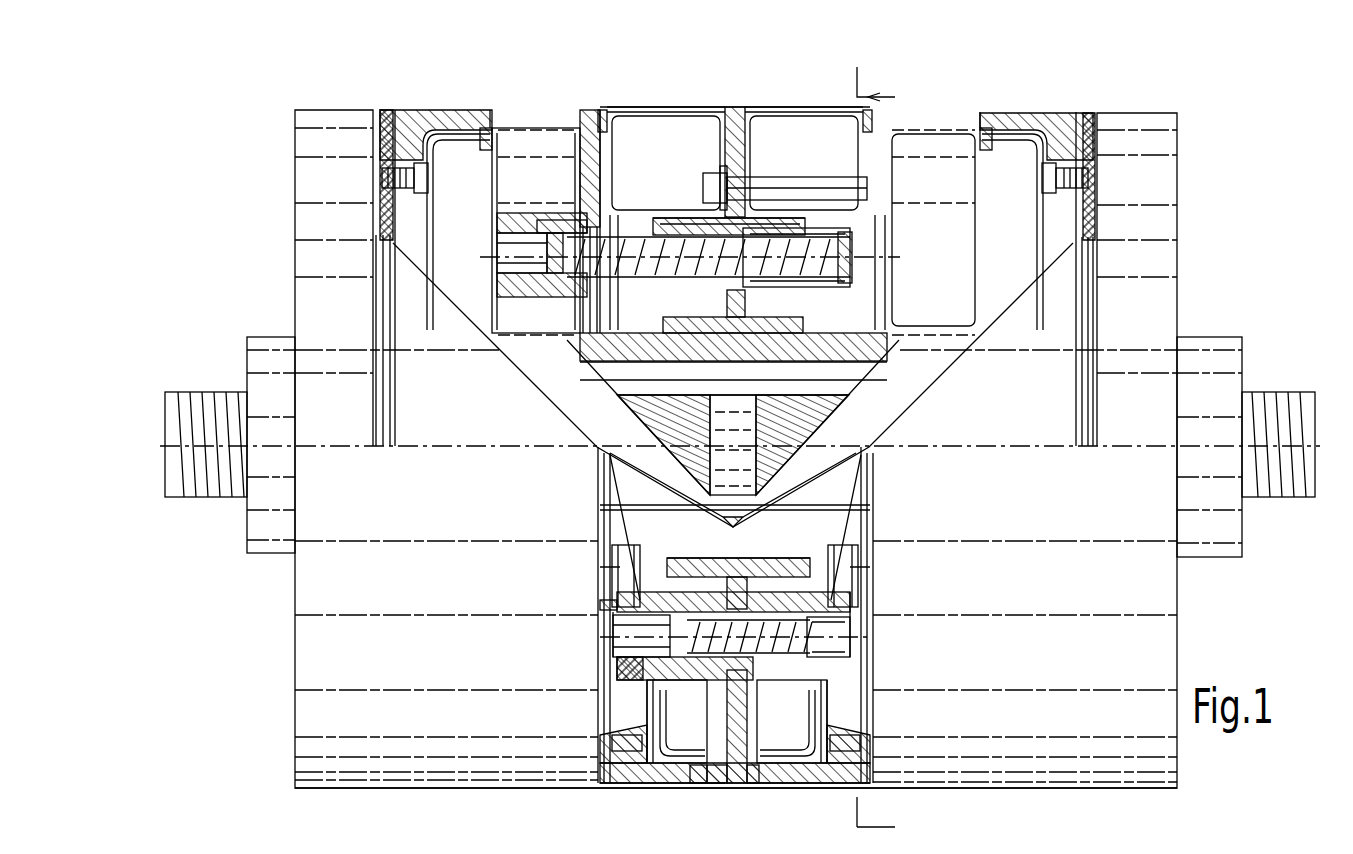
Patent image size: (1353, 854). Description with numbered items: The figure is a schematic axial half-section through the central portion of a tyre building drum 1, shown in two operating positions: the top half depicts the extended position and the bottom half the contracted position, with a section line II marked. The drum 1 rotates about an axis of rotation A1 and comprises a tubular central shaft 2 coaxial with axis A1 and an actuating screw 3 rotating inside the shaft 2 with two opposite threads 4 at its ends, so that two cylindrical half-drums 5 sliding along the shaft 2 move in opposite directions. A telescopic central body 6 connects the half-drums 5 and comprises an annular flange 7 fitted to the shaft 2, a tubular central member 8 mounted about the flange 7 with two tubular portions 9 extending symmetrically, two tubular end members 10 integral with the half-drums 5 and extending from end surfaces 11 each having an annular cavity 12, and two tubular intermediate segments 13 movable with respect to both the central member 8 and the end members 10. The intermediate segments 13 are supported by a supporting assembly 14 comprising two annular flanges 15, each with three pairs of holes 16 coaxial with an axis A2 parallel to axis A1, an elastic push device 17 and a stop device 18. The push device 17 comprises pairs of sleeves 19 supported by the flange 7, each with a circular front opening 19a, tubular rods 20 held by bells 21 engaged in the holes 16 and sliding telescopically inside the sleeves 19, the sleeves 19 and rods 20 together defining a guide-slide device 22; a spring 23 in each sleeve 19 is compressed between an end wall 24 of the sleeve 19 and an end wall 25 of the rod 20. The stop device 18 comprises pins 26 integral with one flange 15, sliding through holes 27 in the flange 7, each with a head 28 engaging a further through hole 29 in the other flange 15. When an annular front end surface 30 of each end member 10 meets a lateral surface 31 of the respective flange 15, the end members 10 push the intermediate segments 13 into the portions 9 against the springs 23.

The tyre building drum 1 is at (235, 158).
The tubular central shaft 2 is at (266, 353).
The actuating screw 3 is at (222, 388).
The thread 4 is at (214, 479).
The cylindrical half-drum 5 is at (350, 98).
The telescopic central body 6 is at (752, 100).
The annular flange 7 is at (743, 116).
The tubular central member 8 is at (690, 105).
The tubular portion 9 is at (644, 108).
The tubular end member 10 is at (481, 115).
The end surface 11 is at (438, 145).
The annular cavity 12 is at (390, 188).
The tubular intermediate segment 13 is at (518, 115).
The supporting assembly 14 is at (568, 194).
The annular flange 15 is at (635, 176).
The hole 16 is at (611, 237).
The elastic push device 17 is at (686, 212).
The stop device 18 is at (790, 176).
The sleeve 19 is at (812, 226).
The circular front opening 19a is at (677, 300).
The tubular rod 20 is at (533, 244).
The bell 21 is at (528, 296).
The guide-slide device 22 is at (670, 207).
The spring 23 is at (776, 264).
The end wall of sleeve 24 is at (855, 262).
The end wall of rod 25 is at (570, 293).
The pin 26 is at (764, 177).
The through hole 27 is at (709, 174).
The head 28 is at (720, 173).
The further through hole 29 is at (591, 190).
The annular front end surface 30 is at (487, 127).
The lateral surface 31 is at (600, 118).
The axis of rotation A1 is at (488, 448).
The axis A2 is at (479, 258).
The section line II is at (881, 445).